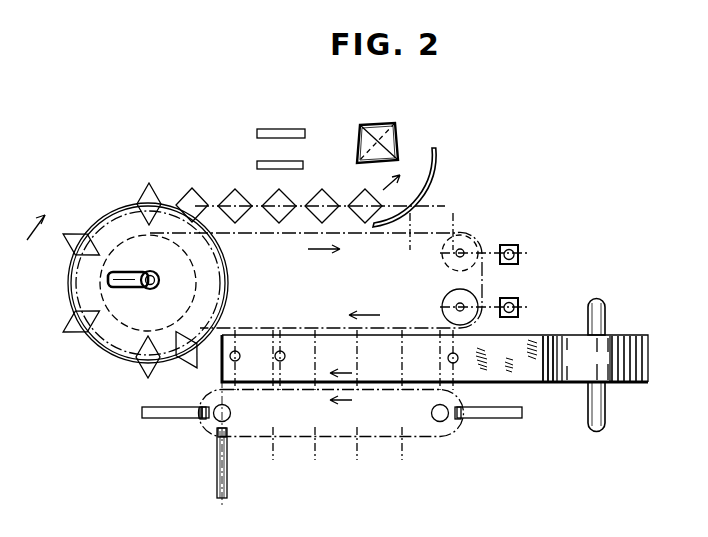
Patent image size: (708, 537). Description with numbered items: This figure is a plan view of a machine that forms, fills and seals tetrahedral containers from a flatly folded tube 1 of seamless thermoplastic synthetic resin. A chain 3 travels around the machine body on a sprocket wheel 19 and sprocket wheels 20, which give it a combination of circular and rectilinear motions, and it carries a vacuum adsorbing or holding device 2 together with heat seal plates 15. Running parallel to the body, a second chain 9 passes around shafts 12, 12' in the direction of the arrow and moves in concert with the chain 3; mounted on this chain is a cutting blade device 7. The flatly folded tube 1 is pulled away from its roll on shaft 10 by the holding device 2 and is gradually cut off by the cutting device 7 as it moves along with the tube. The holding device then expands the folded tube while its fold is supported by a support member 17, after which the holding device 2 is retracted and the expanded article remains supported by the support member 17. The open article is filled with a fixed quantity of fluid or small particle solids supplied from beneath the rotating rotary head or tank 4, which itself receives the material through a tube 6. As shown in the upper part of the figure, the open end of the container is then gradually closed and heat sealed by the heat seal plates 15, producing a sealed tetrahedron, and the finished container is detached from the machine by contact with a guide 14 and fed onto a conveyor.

The flatly folded tube 1 is at (612, 382).
The holding device 2 is at (448, 358).
The chain 3 is at (292, 330).
The rotary head or tank 4 is at (104, 338).
The tube 6 is at (133, 272).
The cutting blade device 7 is at (490, 418).
The chain 9 is at (333, 438).
The shaft 10 is at (588, 418).
The shaft 12 is at (240, 415).
The shaft 12' is at (426, 446).
The guide 14 is at (438, 158).
The heat seal plates 15 is at (280, 130).
The support member 17 is at (186, 418).
The sprocket wheel 19 is at (198, 275).
The sprocket wheels 20 is at (445, 259).